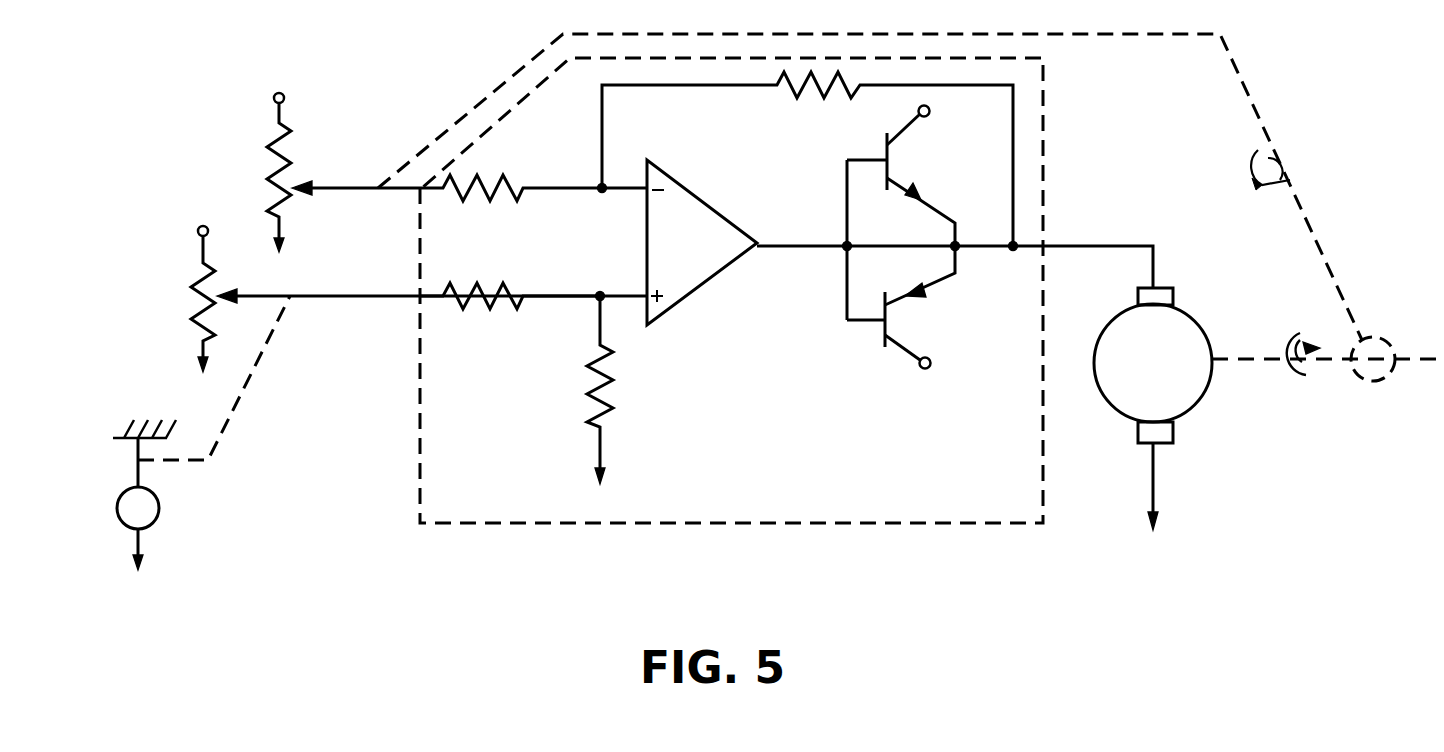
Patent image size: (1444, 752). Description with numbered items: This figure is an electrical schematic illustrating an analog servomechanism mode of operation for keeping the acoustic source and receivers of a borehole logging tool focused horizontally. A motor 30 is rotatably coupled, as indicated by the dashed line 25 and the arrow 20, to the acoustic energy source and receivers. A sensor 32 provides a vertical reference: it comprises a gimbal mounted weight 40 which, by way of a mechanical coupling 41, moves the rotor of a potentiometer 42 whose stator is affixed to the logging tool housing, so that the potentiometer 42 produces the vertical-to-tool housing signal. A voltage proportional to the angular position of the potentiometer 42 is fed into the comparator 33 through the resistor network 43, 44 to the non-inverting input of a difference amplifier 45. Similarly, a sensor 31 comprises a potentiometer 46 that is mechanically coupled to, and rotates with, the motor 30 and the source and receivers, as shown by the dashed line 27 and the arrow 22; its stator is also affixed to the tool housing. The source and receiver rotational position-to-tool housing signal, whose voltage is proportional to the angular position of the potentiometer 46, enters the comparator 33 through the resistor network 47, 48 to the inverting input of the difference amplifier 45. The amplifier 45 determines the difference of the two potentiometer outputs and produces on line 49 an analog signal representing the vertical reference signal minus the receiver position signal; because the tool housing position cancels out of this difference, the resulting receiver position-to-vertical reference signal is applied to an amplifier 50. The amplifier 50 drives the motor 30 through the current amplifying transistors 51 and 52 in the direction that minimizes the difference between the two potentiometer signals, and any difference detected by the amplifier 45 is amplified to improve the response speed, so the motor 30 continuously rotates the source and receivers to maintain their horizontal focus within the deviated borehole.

The arrow 20 is at (1341, 338).
The arrow 22 is at (1286, 176).
The dashed line 25 is at (1252, 357).
The dashed line 27 is at (1258, 114).
The motor 30 is at (1190, 408).
The sensor 31 is at (306, 154).
The sensor 32 is at (170, 334).
The comparator 33 is at (830, 523).
The gimbal mounted weight 40 is at (156, 522).
The coupling 41 is at (247, 400).
The potentiometer 42 is at (195, 305).
The resistor network 43 is at (490, 312).
The resistor network 44 is at (612, 380).
The difference amplifier 45 is at (685, 183).
The potentiometer 46 is at (270, 152).
The resistor network 47 is at (495, 205).
The resistor network 48 is at (778, 96).
The line 49 is at (815, 244).
The amplifier 50 is at (905, 239).
The current amplifying transistor 51 is at (893, 163).
The current amplifying transistor 52 is at (890, 328).